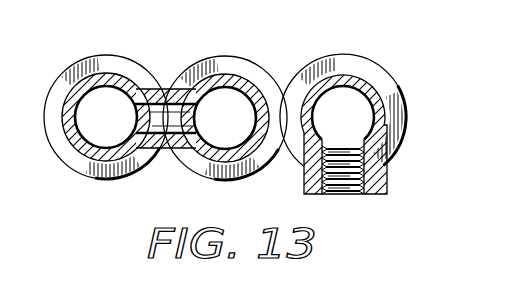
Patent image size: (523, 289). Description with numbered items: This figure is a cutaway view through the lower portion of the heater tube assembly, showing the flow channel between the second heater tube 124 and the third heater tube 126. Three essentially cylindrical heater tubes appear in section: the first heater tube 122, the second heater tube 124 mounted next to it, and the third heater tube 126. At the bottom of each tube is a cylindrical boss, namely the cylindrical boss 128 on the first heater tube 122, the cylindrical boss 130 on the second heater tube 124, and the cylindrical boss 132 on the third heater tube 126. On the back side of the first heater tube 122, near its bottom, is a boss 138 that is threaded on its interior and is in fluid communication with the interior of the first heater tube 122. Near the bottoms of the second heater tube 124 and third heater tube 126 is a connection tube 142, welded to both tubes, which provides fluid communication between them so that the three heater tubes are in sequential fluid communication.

The first heater tube 122 is at (372, 75).
The second heater tube 124 is at (260, 83).
The third heater tube 126 is at (136, 83).
The cylindrical boss 128 is at (393, 97).
The cylindrical boss 130 is at (233, 167).
The cylindrical boss 132 is at (95, 167).
The boss 138 is at (388, 171).
The connection tube 142 is at (163, 147).